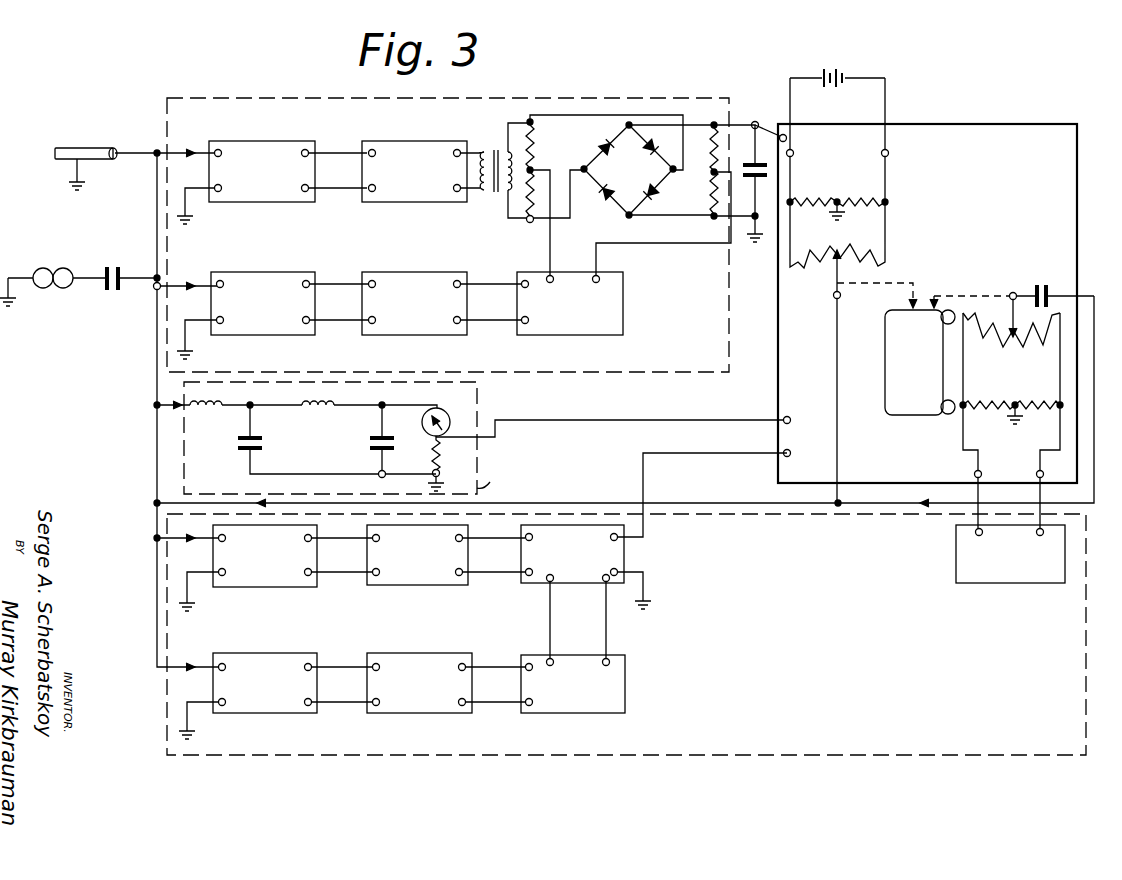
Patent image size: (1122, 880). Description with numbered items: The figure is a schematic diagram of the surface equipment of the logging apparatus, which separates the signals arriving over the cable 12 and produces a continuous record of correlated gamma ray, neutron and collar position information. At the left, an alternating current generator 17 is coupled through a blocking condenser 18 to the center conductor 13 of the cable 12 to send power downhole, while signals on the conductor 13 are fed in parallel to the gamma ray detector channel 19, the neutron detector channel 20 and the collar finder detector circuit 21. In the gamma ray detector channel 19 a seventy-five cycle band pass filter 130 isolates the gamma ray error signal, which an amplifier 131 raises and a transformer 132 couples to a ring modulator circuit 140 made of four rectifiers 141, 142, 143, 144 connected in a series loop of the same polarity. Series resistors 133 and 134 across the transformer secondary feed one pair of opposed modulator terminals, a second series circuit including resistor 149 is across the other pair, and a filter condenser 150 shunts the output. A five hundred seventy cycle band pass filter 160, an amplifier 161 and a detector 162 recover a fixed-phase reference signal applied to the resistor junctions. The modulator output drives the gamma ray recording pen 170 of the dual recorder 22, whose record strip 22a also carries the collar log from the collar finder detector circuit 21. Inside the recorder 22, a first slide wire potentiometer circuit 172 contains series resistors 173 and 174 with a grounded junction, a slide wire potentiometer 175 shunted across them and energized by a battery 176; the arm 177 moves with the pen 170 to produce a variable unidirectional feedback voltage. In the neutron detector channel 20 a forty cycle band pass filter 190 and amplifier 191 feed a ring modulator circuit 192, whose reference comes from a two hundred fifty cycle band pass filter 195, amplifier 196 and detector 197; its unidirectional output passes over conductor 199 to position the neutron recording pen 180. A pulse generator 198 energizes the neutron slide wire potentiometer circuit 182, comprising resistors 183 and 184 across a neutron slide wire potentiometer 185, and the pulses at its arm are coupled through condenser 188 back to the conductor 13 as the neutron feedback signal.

The cable 12 is at (88, 124).
The center conductor 13 is at (130, 160).
The alternating current generator 17 is at (63, 289).
The blocking condenser 18 is at (112, 265).
The gamma ray detector channel 19 is at (470, 97).
The neutron detector channel 20 is at (621, 604).
The collar finder detector circuit 21 is at (478, 393).
The recorder 22 is at (936, 273).
The record strip 22a is at (915, 415).
The 75 cycle band pass filter 130 is at (270, 133).
The amplifier 131 is at (431, 135).
The transformer 132 is at (530, 170).
The resistor 133 is at (534, 130).
The resistor 134 is at (527, 203).
The ring modulator circuit 140 is at (646, 175).
The rectifier 141 is at (603, 146).
The rectifier 142 is at (664, 147).
The rectifier 143 is at (658, 193).
The rectifier 144 is at (606, 200).
The resistor 149 is at (710, 202).
The filter condenser 150 is at (746, 162).
The 570 cycle band pass filter 160 is at (272, 265).
The amplifier 161 is at (432, 265).
The detector 162 is at (532, 272).
The gamma ray recording pen 170 is at (915, 286).
The first slide wire potentiometer circuit 172 is at (837, 354).
The resistor 173 is at (807, 200).
The resistor 174 is at (872, 200).
The slide wire potentiometer 175 is at (832, 270).
The battery 176 is at (838, 75).
The arm 177 is at (804, 308).
The neutron recording pen 180 is at (956, 288).
The neutron slide wire potentiometer circuit 182 is at (1011, 379).
The resistor 183 is at (991, 412).
The resistor 184 is at (1043, 412).
The neutron slide wire potentiometer 185 is at (984, 316).
The condenser 188 is at (1043, 284).
The 40 cycle band pass filter 190 is at (300, 588).
The amplifier 191 is at (445, 587).
The ring modulator circuit 192 is at (628, 550).
The 250 cycle band pass filter 195 is at (292, 653).
The amplifier 196 is at (419, 650).
The detector 197 is at (628, 672).
The pulse generator 198 is at (1042, 584).
The conductor 199 is at (645, 530).